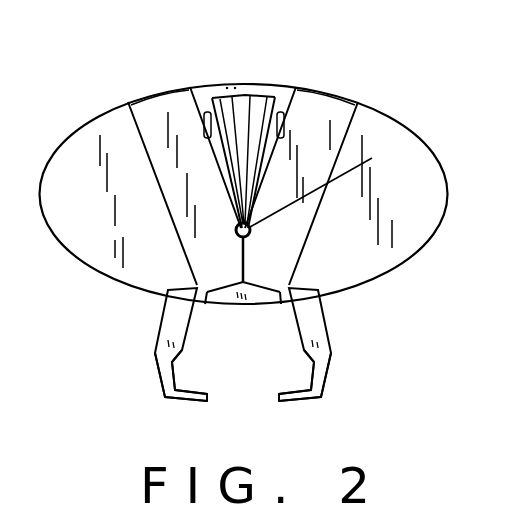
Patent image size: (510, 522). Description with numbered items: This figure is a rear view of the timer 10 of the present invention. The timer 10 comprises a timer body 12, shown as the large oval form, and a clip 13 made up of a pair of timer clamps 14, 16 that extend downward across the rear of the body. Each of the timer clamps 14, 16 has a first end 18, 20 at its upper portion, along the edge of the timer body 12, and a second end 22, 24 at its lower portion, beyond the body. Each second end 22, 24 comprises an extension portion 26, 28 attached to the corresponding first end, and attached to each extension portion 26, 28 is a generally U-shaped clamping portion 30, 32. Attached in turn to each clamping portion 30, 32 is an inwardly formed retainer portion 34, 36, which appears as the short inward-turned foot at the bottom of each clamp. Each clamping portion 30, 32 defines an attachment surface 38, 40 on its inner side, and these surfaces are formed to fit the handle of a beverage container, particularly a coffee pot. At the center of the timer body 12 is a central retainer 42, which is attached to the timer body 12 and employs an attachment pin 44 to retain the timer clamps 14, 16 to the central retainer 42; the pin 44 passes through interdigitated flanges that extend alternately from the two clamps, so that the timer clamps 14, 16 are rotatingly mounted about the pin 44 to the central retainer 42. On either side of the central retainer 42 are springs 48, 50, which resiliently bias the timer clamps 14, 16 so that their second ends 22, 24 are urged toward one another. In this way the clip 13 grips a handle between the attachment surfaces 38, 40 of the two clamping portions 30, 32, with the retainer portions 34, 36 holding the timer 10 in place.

The timer 10 is at (369, 64).
The timer body 12 is at (72, 130).
The clip 13 is at (320, 160).
The timer clamp 14 is at (175, 120).
The timer clamp 16 is at (323, 108).
The first end 18 is at (350, 97).
The first end 20 is at (147, 92).
The second end 22 is at (205, 402).
The second end 24 is at (277, 403).
The extension portion 26 is at (180, 285).
The extension portion 28 is at (298, 284).
The clamping portion 30 is at (143, 355).
The clamping portion 32 is at (343, 355).
The retainer portion 34 is at (200, 413).
The retainer portion 36 is at (327, 410).
The attachment surface 38 is at (175, 377).
The attachment surface 40 is at (311, 378).
The central retainer 42 is at (248, 92).
The attachment pin 44 is at (372, 158).
The spring 48 is at (207, 112).
The spring 50 is at (284, 110).